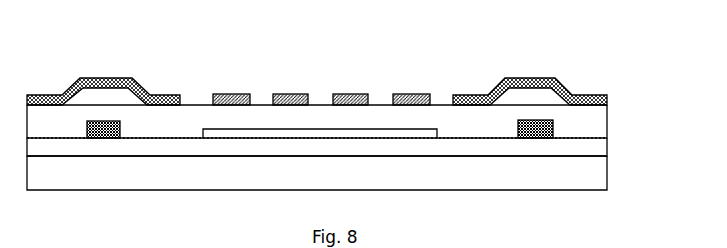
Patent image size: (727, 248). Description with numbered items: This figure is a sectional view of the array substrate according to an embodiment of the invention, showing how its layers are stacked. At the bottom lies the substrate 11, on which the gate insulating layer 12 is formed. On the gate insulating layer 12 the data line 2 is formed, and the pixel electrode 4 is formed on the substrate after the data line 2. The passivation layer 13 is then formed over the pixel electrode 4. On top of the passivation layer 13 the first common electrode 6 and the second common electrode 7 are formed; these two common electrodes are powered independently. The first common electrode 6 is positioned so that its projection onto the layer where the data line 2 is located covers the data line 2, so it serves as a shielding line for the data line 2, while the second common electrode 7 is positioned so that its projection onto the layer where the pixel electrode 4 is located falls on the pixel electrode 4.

The data line 2 is at (553, 120).
The pixel electrode 4 is at (302, 137).
The first common electrode 6 is at (95, 80).
The second common electrode 7 is at (412, 93).
The substrate 11 is at (580, 172).
The gate insulating layer 12 is at (580, 148).
The passivation layer 13 is at (580, 123).